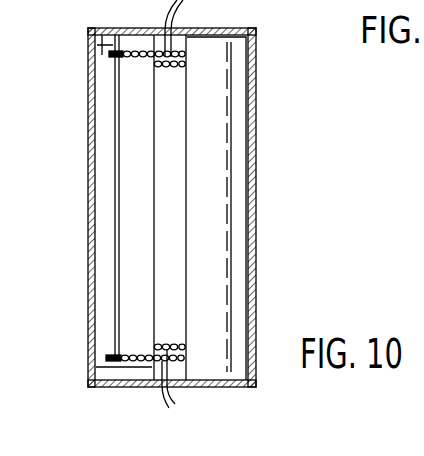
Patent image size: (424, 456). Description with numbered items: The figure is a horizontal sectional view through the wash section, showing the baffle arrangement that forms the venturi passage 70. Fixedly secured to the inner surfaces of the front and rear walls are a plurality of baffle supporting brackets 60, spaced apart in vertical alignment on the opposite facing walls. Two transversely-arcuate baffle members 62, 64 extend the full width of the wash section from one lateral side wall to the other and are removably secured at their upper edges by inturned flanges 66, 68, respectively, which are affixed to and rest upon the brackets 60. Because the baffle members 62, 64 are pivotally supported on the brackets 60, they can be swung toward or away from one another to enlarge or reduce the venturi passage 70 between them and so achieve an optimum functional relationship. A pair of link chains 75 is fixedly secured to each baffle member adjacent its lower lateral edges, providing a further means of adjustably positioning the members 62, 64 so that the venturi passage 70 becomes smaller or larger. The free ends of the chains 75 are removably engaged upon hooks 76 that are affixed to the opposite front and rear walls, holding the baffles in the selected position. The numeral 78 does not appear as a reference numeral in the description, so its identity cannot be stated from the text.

The baffle supporting bracket 60 is at (106, 117).
The baffle member 62 is at (207, 182).
The baffle member 64 is at (135, 178).
The inturned flange 66 is at (240, 113).
The inturned flange 68 is at (108, 44).
The venturi passage 70 is at (166, 257).
The link chain 75 is at (165, 211).
The hook 76 is at (108, 357).
The upper nut 78 is at (116, 50).